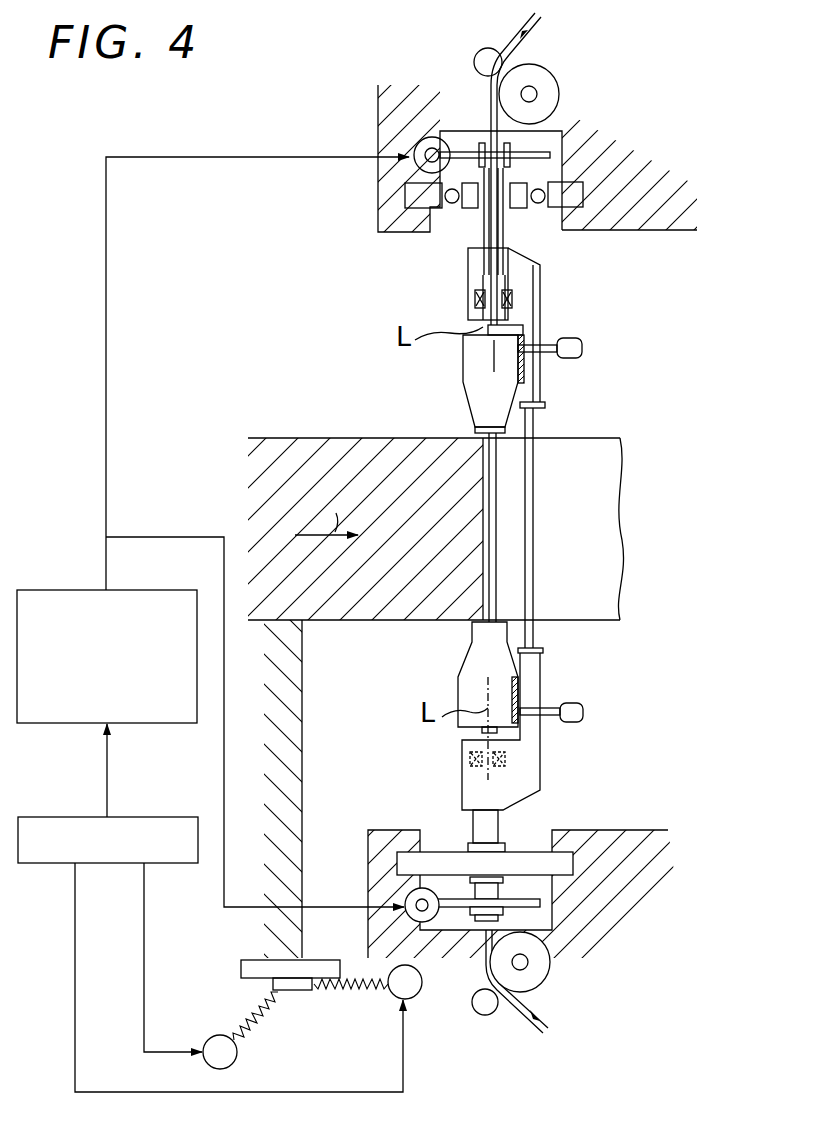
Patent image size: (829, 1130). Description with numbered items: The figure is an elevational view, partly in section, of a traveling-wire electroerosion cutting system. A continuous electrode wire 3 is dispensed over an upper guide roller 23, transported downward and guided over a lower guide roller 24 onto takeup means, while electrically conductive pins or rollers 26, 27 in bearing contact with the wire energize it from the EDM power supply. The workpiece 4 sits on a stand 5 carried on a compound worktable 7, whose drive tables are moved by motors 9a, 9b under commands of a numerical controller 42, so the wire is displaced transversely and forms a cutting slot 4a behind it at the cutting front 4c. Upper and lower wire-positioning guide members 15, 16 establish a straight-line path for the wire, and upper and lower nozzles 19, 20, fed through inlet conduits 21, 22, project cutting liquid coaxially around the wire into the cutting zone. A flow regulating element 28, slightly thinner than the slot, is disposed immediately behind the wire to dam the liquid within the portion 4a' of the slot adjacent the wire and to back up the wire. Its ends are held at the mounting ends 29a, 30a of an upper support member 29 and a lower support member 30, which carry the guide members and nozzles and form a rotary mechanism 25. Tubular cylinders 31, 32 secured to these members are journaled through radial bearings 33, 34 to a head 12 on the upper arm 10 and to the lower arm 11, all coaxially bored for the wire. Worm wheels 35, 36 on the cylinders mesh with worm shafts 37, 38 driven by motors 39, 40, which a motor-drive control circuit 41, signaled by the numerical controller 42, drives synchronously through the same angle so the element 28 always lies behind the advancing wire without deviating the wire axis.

The electrode wire 3 is at (538, 47).
The workpiece 4 is at (459, 504).
The cutting slot 4a is at (643, 529).
The portion of the cutting slot 4a' is at (538, 529).
The cutting front 4c is at (483, 545).
The stand 5 is at (303, 731).
The compound worktable 7 is at (305, 992).
The motor 9a is at (237, 1056).
The motor 9b is at (390, 995).
The upper arm 10 is at (668, 231).
The lower arm 11 is at (622, 830).
The head 12 is at (385, 88).
The upper wire-positioning guide member 15 is at (475, 299).
The lower wire-positioning guide member 16 is at (470, 758).
The upper nozzle 19 is at (463, 376).
The lower nozzle 20 is at (458, 680).
The inlet conduit 21 is at (574, 338).
The inlet conduit 22 is at (584, 713).
The upper guide roller 23 is at (554, 97).
The lower guide roller 24 is at (547, 978).
The rotary mechanism 25 is at (668, 386).
The electrically conductive pin or roller 26 is at (476, 56).
The electrically conductive pin or roller 27 is at (478, 1013).
The flow regulating element 28 is at (535, 541).
The upper support member 29 is at (541, 278).
The mounting end 29a is at (546, 406).
The lower support member 30 is at (541, 779).
The mounting end 30a is at (545, 652).
The upper cylinder 31 is at (505, 240).
The lower cylinder 32 is at (499, 831).
The radial bearing 33 is at (584, 194).
The radial bearing 34 is at (574, 866).
The worm wheel 35 is at (474, 143).
The worm wheel 36 is at (538, 910).
The worm shaft 37 is at (432, 137).
The worm shaft 38 is at (428, 922).
The motor 39 is at (413, 145).
The motor 40 is at (405, 918).
The motor-drive control circuit 41 is at (168, 725).
The numerical controller 42 is at (178, 865).